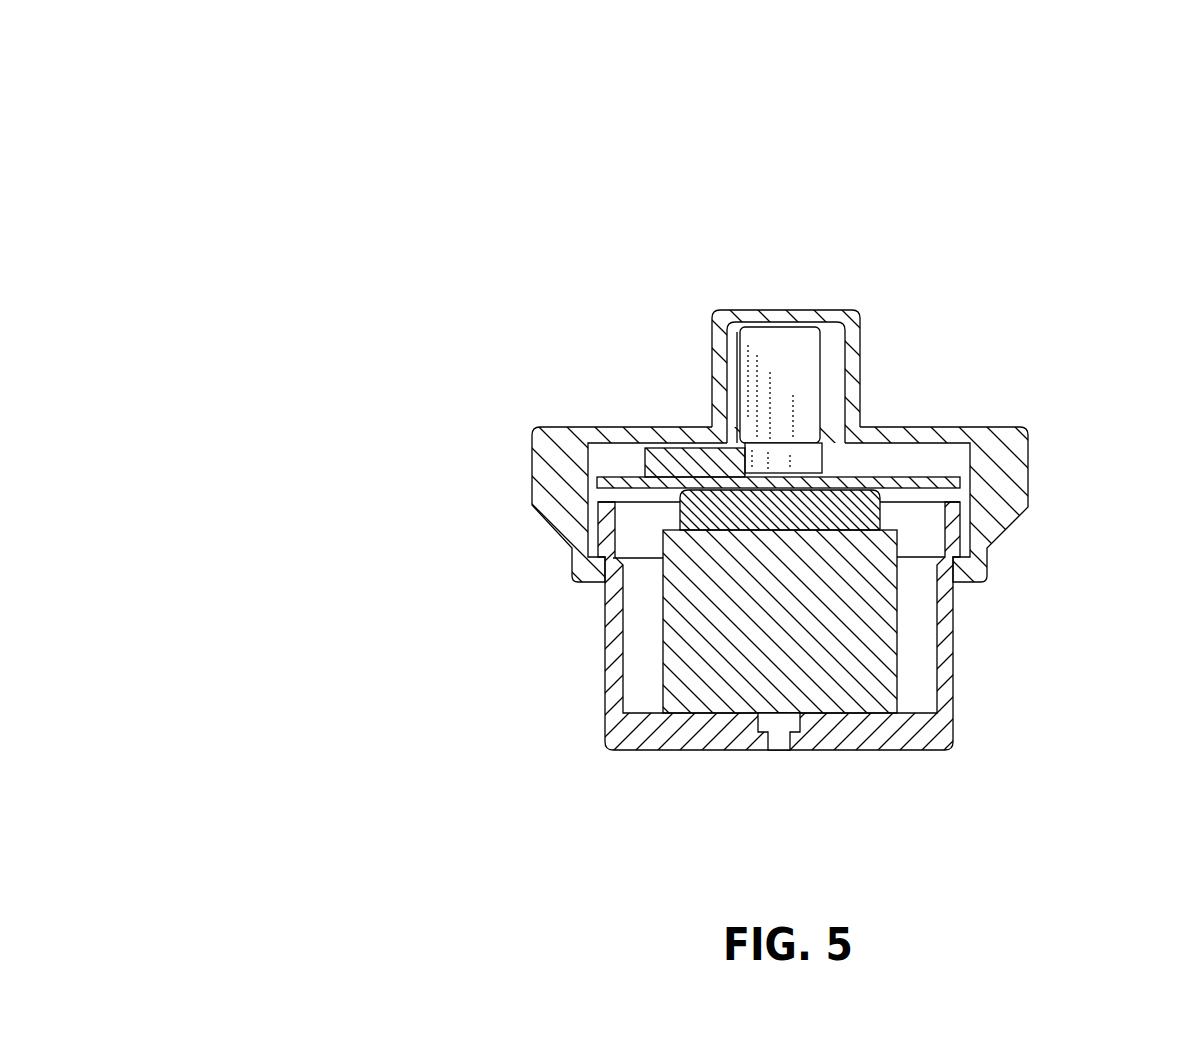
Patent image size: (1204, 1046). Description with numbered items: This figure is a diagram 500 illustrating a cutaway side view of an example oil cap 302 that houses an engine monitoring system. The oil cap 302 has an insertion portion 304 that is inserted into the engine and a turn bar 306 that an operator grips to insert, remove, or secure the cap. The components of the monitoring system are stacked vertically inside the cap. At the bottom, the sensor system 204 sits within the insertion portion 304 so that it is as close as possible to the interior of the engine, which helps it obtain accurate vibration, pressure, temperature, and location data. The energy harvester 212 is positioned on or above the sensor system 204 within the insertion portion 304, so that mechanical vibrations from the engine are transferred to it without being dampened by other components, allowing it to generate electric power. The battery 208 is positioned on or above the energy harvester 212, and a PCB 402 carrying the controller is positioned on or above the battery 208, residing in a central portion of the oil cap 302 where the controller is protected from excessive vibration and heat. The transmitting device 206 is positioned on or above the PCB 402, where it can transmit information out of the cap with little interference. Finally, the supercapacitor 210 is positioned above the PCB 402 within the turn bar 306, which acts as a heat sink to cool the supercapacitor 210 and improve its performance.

The diagram 500 is at (292, 66).
The oil cap 302 is at (512, 347).
The turn bar 306 is at (856, 330).
The supercapacitor 210 is at (783, 345).
The transmitting device 206 is at (684, 446).
The PCB 402 is at (935, 482).
The insertion portion 304 is at (642, 737).
The energy harvester 212 is at (858, 646).
The battery 208 is at (848, 518).
The sensor system 204 is at (777, 728).